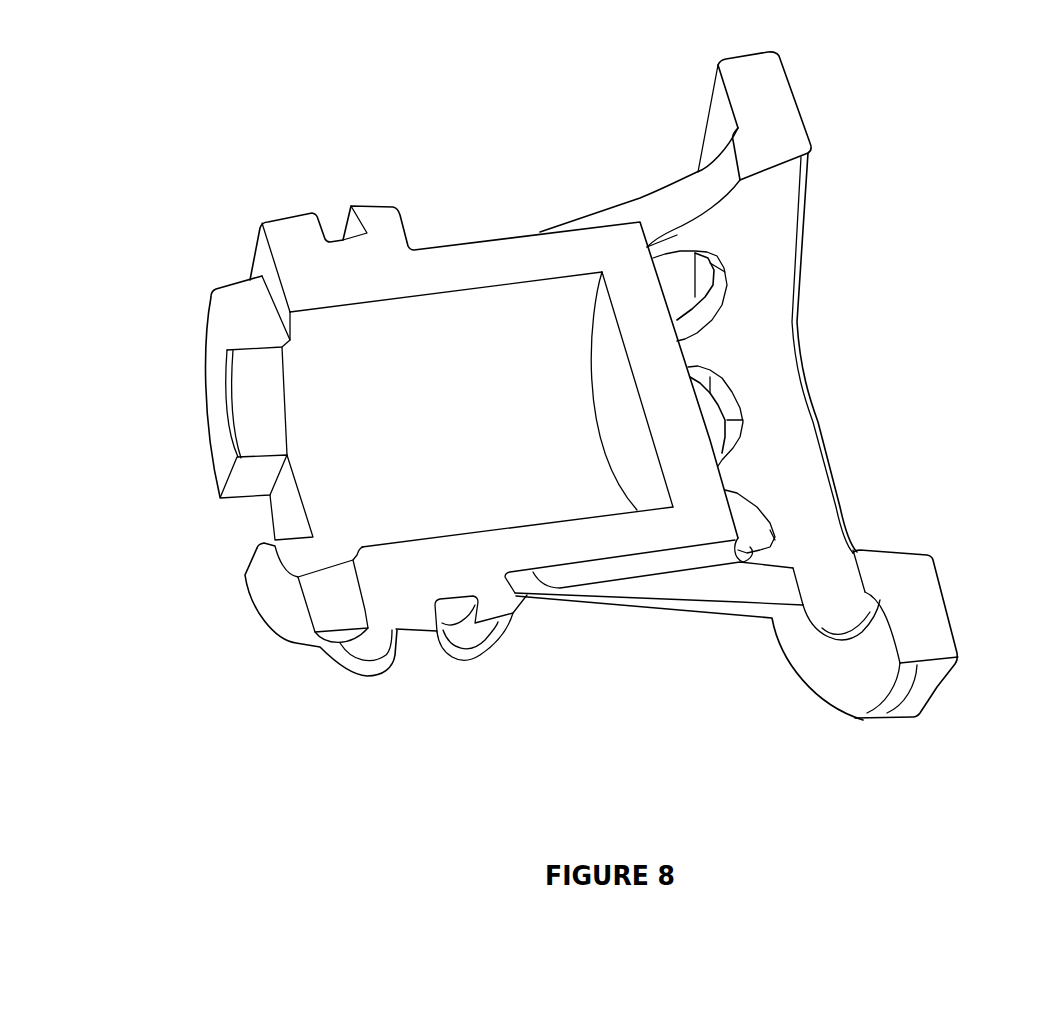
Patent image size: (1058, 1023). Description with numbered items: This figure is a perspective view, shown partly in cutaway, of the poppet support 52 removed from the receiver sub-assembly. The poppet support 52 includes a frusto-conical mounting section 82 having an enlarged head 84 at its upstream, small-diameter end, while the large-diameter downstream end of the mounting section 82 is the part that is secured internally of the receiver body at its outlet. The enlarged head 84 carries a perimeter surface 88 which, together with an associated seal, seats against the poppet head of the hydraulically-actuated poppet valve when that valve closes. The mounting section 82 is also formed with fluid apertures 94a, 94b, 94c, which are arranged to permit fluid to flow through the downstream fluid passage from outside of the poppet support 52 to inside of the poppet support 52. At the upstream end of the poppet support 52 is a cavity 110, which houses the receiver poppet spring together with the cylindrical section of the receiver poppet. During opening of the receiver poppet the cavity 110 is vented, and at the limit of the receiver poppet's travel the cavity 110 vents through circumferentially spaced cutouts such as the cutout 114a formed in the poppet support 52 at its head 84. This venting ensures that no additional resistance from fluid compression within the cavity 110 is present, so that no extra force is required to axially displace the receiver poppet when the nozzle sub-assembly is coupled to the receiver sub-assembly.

The poppet support 52 is at (457, 142).
The frusto-conical mounting section 82 is at (800, 507).
The enlarged head 84 is at (320, 657).
The perimeter surface 88 is at (400, 651).
The fluid aperture 94a is at (673, 283).
The fluid aperture 94b is at (700, 403).
The fluid aperture 94c is at (745, 548).
The cavity 110 is at (337, 423).
The cutout 114a is at (255, 523).